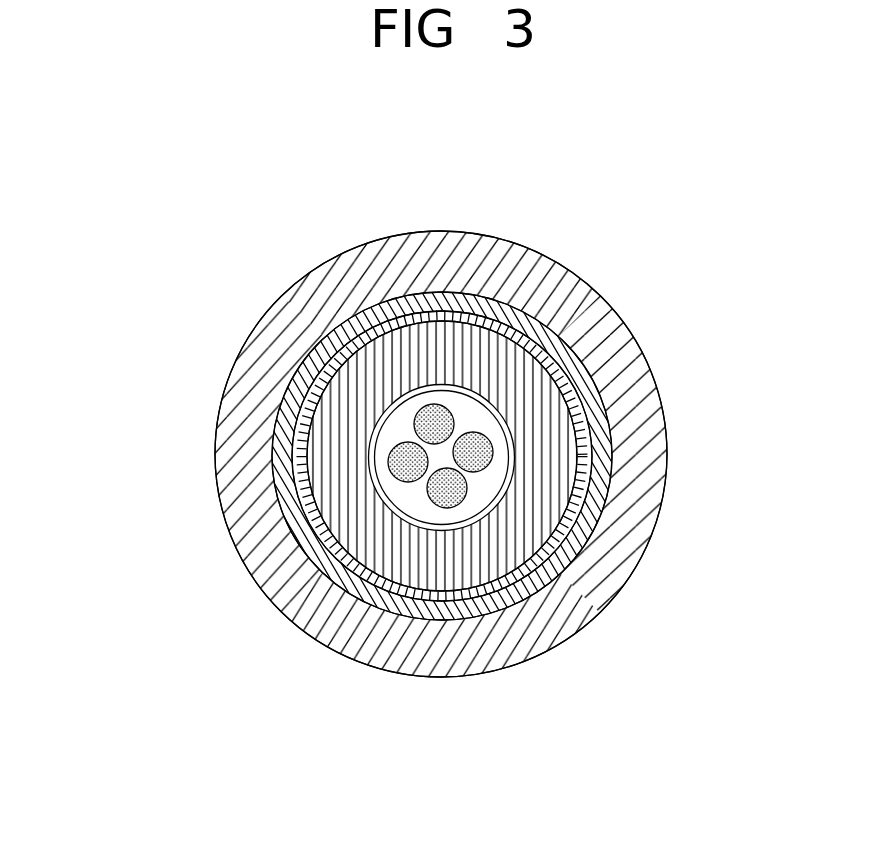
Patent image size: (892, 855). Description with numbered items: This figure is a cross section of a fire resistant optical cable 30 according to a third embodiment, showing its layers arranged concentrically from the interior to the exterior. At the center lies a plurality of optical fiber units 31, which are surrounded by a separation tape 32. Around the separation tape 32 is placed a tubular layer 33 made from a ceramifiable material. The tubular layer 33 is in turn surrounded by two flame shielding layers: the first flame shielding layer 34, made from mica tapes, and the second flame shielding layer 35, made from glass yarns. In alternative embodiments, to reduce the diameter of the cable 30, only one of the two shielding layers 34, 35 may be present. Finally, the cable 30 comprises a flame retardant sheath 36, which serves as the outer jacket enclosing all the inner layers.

The fire resistant optical cable 30 is at (222, 308).
The optical fiber units 31 is at (390, 476).
The separation tape 32 is at (368, 452).
The tubular layer 33 is at (345, 572).
The first flame shielding layer 34 is at (455, 618).
The second flame shielding layer 35 is at (508, 610).
The flame retardant sheath 36 is at (643, 558).